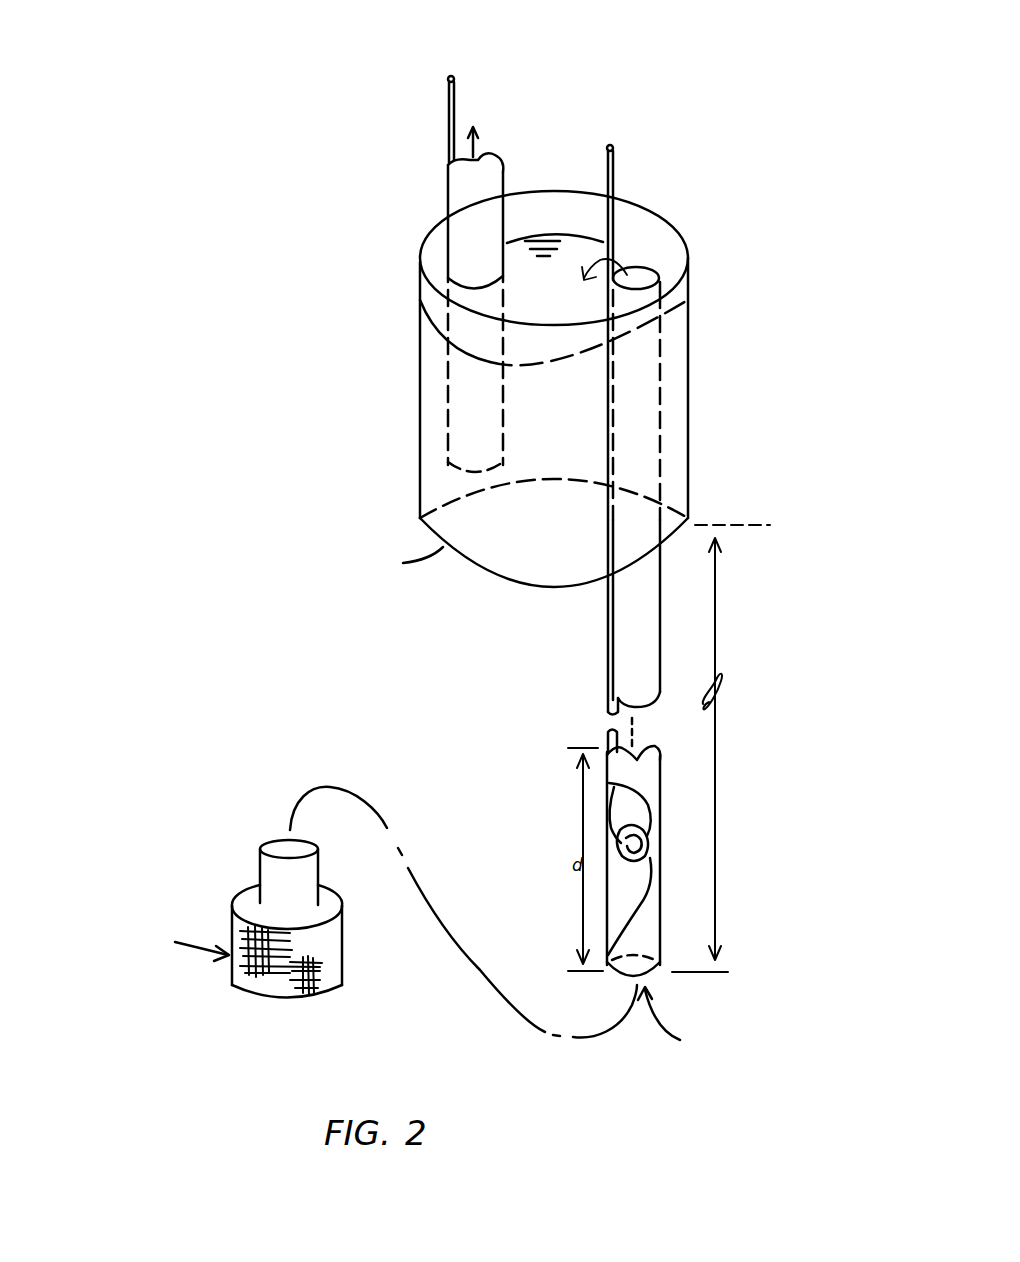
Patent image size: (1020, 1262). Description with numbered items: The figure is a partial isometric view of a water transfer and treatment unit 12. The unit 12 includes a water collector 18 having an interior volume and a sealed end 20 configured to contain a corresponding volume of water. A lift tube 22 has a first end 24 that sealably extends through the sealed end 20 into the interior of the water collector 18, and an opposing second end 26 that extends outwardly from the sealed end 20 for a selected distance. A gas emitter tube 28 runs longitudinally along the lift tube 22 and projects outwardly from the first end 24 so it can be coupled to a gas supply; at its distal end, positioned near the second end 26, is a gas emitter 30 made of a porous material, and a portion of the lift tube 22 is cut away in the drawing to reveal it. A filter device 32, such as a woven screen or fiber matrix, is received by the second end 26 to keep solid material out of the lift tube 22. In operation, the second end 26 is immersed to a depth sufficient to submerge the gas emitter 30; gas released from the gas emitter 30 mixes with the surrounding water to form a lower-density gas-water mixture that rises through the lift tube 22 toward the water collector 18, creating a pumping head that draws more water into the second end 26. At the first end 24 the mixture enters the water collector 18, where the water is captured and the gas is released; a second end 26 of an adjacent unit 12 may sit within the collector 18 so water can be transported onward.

The water transfer and treatment unit 12 is at (302, 110).
The water collector 18 is at (690, 413).
The sealed end 20 is at (403, 563).
The lift tube 22 is at (447, 200).
The first end 24 is at (690, 265).
The second end 26 is at (447, 472).
The gas emitter tube 28 is at (457, 107).
The gas emitter 30 is at (642, 845).
The filter device 32 is at (232, 895).